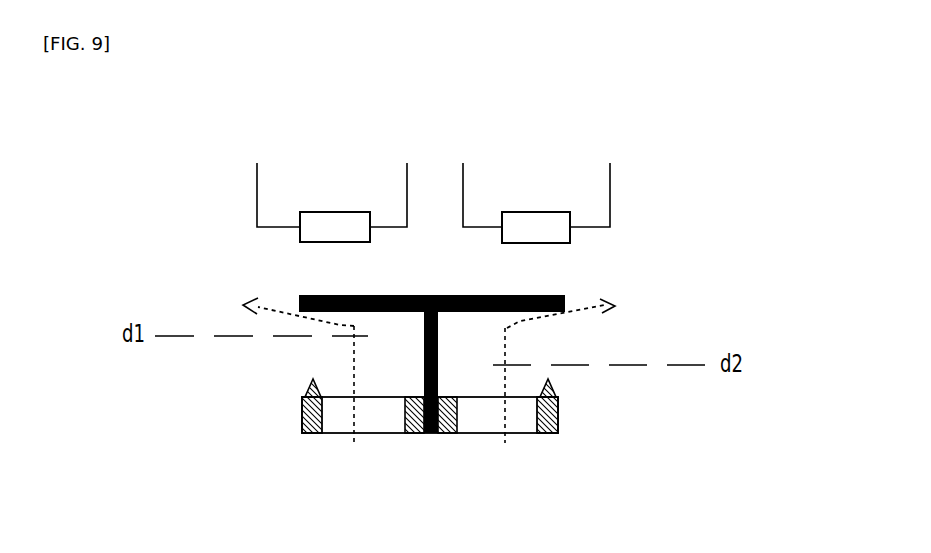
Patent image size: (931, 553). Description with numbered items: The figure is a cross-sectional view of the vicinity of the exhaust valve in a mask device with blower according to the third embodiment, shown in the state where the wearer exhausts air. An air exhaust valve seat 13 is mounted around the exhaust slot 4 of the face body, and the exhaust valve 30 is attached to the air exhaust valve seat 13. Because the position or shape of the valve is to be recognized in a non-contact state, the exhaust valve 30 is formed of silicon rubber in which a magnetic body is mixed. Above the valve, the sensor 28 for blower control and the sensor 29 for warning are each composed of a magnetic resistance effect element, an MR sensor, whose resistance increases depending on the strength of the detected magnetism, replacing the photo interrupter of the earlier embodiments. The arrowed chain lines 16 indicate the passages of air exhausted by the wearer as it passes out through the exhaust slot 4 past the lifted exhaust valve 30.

The sensor for blower control 28 is at (333, 207).
The sensor for warning 29 is at (538, 207).
The exhaust valve 30 is at (541, 295).
The air exhaust valve seat 13 is at (560, 412).
The passages of exhausted air 16 is at (352, 420).
The exhaust slot 4 is at (470, 420).